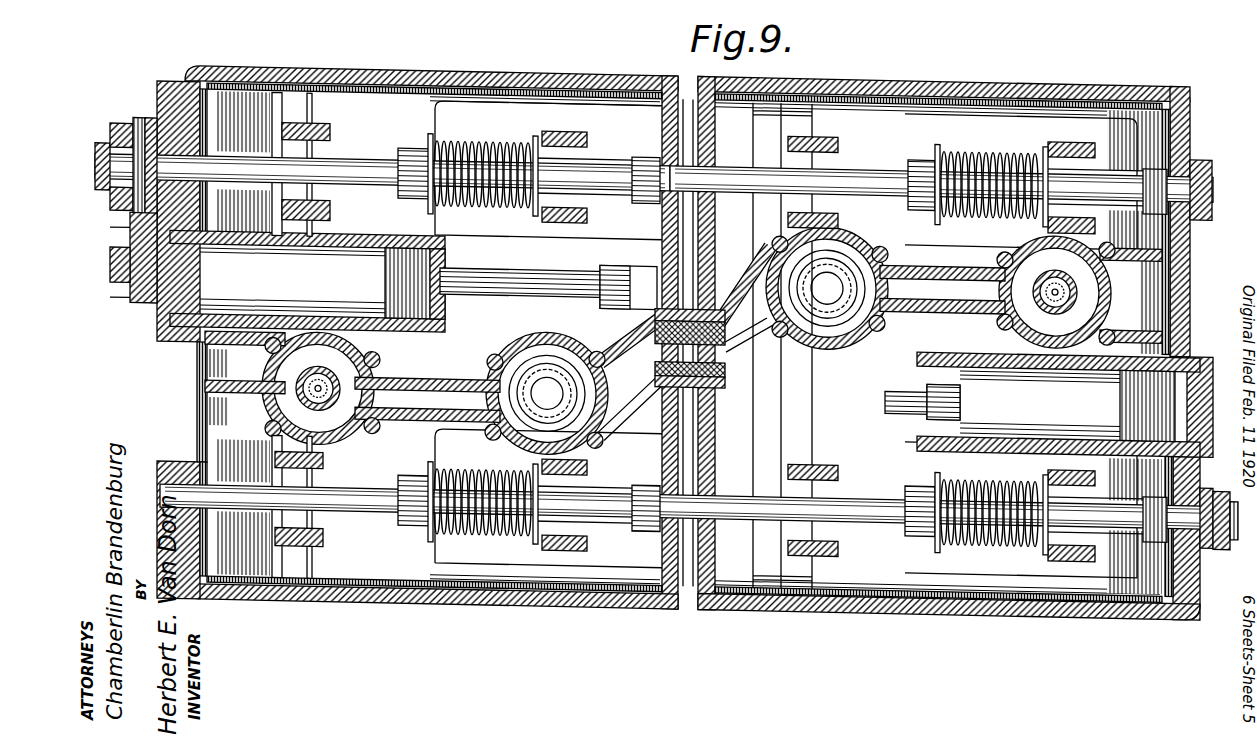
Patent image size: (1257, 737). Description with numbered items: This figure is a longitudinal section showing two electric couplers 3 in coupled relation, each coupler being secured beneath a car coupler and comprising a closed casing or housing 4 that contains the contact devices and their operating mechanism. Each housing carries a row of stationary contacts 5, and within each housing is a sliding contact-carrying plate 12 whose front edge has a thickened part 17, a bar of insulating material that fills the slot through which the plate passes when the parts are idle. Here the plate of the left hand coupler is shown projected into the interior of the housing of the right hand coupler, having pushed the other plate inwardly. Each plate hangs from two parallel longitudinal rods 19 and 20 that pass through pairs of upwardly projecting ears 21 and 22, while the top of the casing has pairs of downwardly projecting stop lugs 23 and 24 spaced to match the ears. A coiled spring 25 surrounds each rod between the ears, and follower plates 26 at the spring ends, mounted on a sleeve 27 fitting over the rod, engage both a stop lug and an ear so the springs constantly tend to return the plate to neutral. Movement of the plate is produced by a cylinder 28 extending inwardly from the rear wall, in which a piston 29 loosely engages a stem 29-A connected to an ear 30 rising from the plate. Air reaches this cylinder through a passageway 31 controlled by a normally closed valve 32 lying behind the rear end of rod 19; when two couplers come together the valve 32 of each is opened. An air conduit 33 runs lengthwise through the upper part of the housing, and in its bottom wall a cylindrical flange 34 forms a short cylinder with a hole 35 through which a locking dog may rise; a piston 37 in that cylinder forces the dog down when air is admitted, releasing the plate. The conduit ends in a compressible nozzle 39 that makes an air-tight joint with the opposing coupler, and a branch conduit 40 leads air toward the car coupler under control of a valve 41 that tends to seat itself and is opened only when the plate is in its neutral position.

The electric coupler 3 is at (222, 67).
The casing or housing 4 is at (300, 75).
The stationary contacts 5 is at (284, 150).
The sliding plate 12 is at (958, 78).
The thickened part 17 is at (765, 572).
The rod 19 is at (262, 172).
The rod 20 is at (845, 164).
The ears 21 is at (405, 150).
The ears 22 is at (640, 186).
The stop lugs 23 is at (330, 128).
The stop lugs 24 is at (590, 130).
The coiled spring 25 is at (455, 203).
The follower plates 26 is at (540, 134).
The sleeve 27 is at (598, 162).
The cylinder 28 is at (950, 340).
The piston 29 is at (385, 280).
The stem 29-A is at (465, 270).
The ear 30 is at (620, 258).
The passageway 31 is at (140, 252).
The valve 32 is at (143, 125).
The air conduit 33 is at (781, 339).
The cylindrical flange 34 is at (532, 354).
The hole 35 is at (928, 262).
The piston 37 is at (548, 366).
The compressible nozzle 39 is at (660, 378).
The branch conduit 40 is at (245, 400).
The valve 41 is at (320, 400).